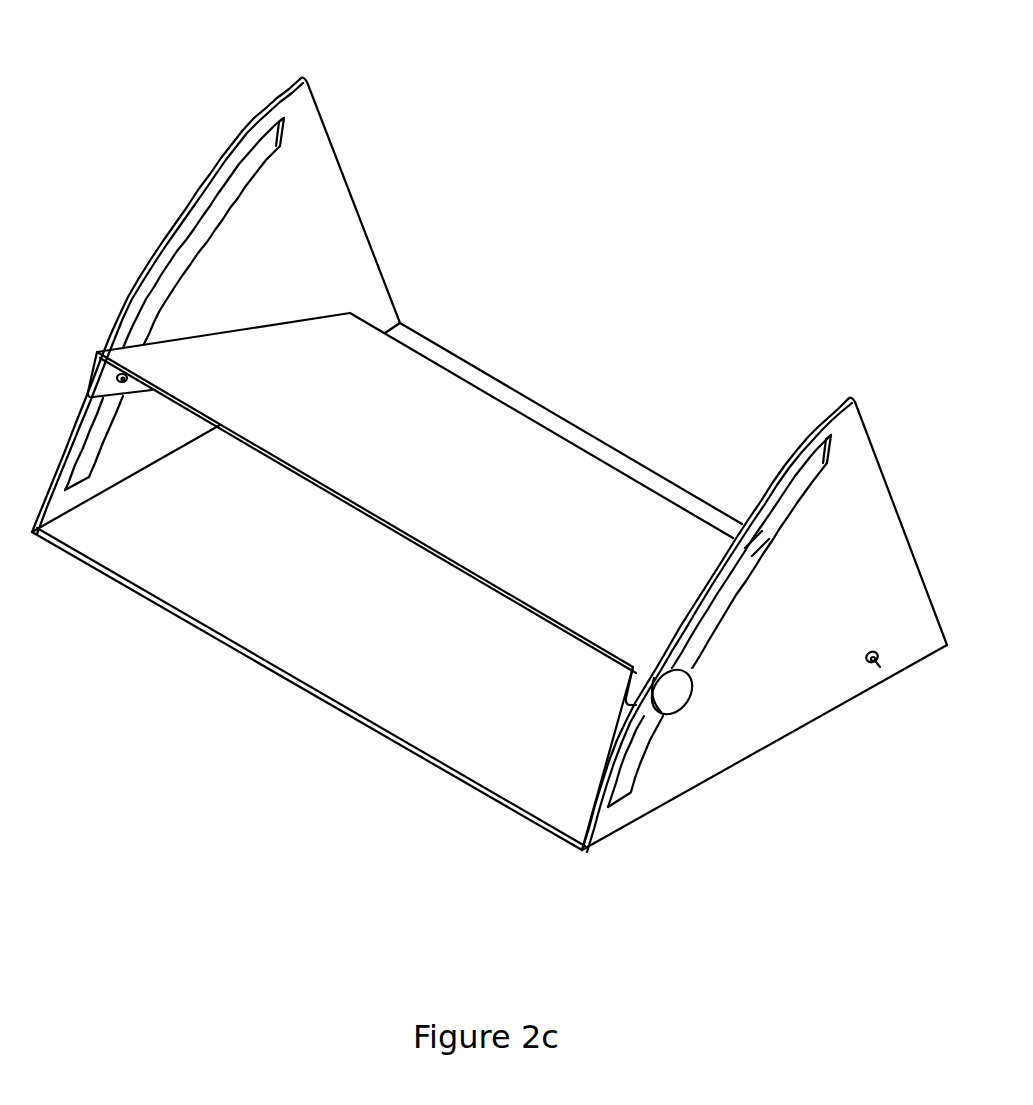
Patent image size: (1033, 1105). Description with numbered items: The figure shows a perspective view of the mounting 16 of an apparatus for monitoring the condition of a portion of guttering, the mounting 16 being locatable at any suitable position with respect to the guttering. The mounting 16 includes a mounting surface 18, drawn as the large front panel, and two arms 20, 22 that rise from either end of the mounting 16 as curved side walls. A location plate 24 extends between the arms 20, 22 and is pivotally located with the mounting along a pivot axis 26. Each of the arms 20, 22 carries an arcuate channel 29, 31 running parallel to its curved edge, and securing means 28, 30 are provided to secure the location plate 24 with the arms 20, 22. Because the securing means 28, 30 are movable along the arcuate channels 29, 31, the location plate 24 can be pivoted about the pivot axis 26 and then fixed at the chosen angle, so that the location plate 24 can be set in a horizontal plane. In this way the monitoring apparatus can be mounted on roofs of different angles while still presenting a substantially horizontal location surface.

The mounting 16 is at (700, 757).
The mounting surface 18 is at (193, 573).
The arm 20 is at (316, 162).
The arm 22 is at (788, 723).
The location plate 24 is at (182, 377).
The pivot axis 26 is at (880, 665).
The securing means 28 is at (113, 377).
The arcuate channel 29 is at (262, 163).
The securing means 30 is at (670, 697).
The arcuate channel 31 is at (813, 463).